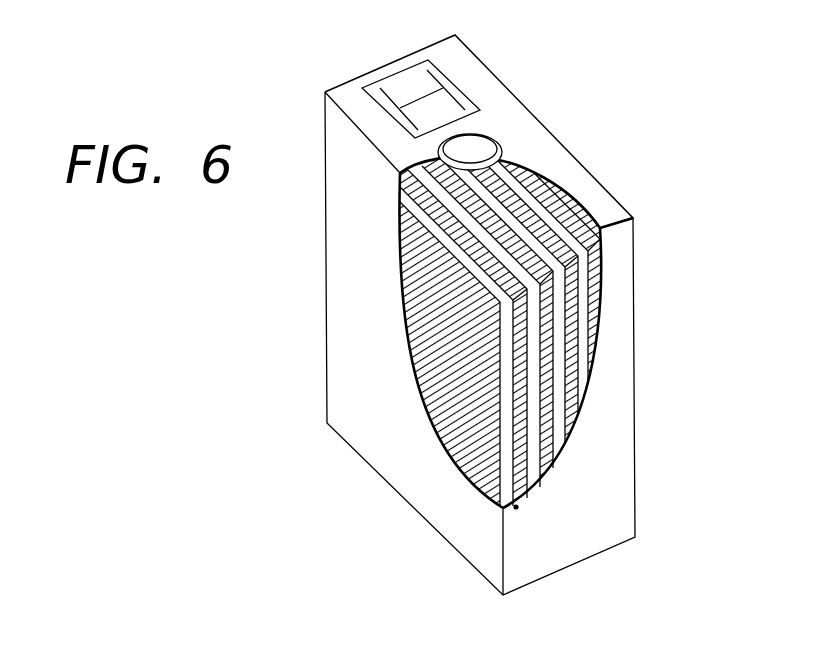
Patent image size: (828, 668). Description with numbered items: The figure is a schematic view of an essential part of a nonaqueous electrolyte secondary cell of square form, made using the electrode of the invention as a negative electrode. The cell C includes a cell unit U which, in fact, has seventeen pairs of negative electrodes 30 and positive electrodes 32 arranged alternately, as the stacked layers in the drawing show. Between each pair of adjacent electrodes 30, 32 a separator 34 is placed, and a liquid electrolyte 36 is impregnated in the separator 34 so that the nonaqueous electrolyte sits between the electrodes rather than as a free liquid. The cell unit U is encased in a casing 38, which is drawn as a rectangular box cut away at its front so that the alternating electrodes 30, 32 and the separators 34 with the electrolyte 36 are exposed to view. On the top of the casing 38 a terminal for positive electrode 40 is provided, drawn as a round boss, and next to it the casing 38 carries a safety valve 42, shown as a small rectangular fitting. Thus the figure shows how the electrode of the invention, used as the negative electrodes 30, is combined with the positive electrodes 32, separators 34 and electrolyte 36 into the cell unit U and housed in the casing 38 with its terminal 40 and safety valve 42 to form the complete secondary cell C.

The negative electrode 30 is at (517, 468).
The positive electrode 32 is at (532, 373).
The separator 34 is at (522, 430).
The liquid electrolyte 36 is at (573, 303).
The casing 38 is at (550, 157).
The terminal for positive electrode 40 is at (480, 150).
The safety valve 42 is at (404, 83).
The cell unit U is at (516, 508).
The cell C is at (345, 556).